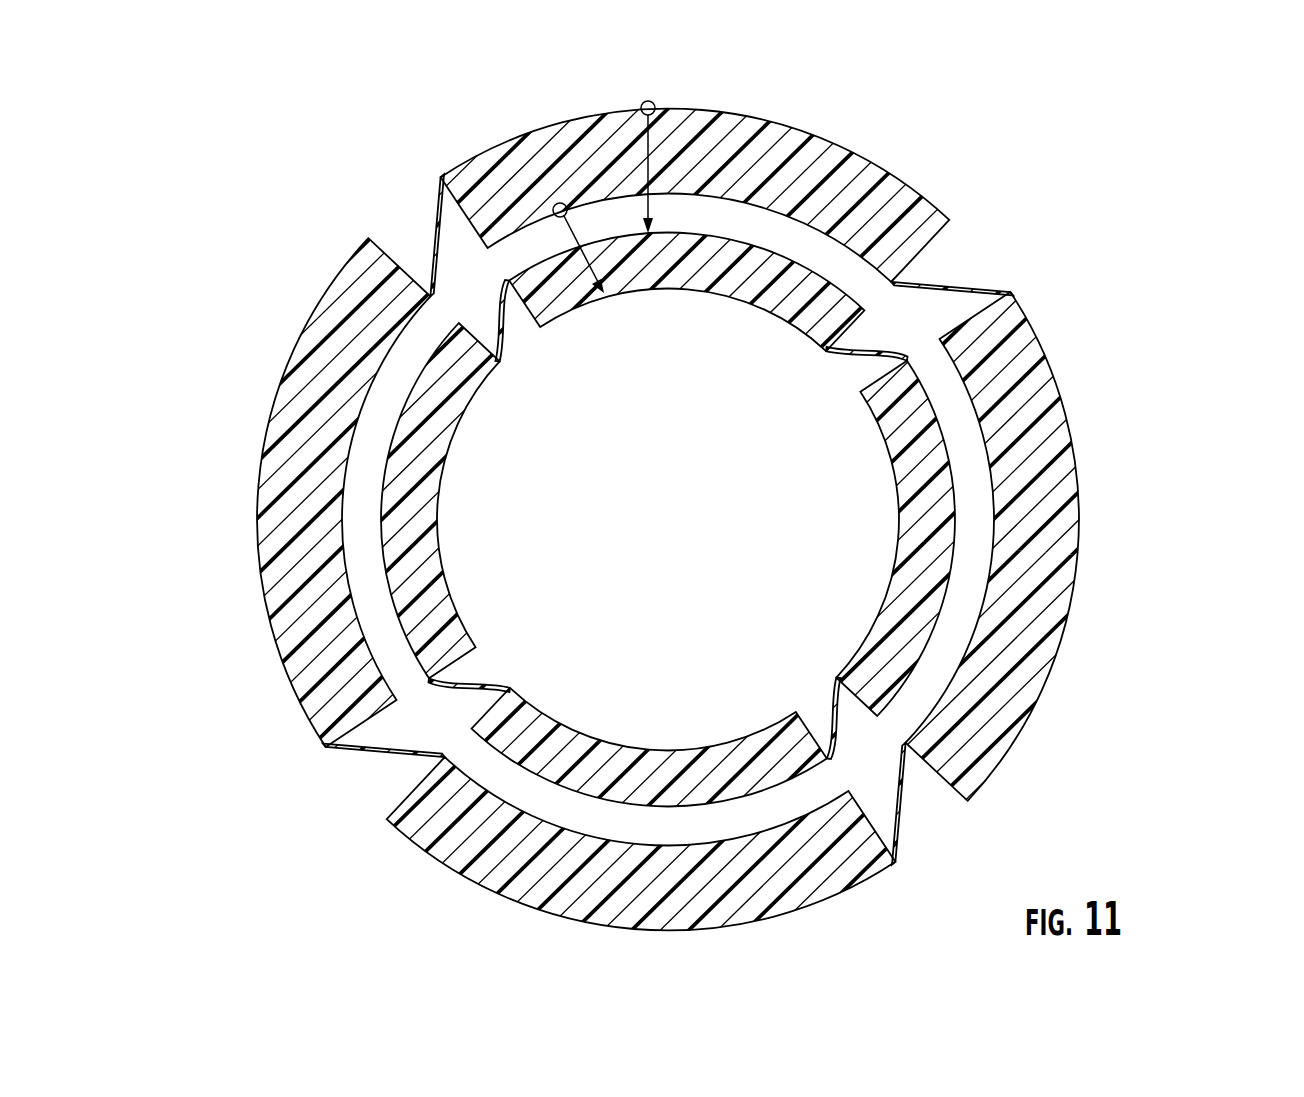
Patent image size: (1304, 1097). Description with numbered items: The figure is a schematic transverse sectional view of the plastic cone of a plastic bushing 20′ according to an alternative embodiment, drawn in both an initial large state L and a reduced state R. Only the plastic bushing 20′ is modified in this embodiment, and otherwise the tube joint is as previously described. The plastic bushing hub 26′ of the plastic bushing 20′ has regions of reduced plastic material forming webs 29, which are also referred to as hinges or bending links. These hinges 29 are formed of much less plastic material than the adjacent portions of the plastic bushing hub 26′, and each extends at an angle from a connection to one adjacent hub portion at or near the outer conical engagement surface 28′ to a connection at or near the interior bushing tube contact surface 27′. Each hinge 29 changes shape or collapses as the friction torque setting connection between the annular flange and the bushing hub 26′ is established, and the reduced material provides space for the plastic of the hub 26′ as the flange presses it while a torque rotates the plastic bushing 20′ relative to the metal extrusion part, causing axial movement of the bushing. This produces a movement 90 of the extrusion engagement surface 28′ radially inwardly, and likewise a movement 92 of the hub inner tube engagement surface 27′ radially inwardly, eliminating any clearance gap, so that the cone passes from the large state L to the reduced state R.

The plastic bushing 20′ is at (1151, 603).
The plastic bushing hub 26′ is at (920, 512).
The interior bushing tube contact surface 27′ is at (413, 385).
The outer conical engagement surface 28′ is at (950, 575).
The web 29 is at (436, 216).
The movement of extrusion engagement surface 90 is at (654, 150).
The movement of hub inner surface 92 is at (569, 214).
The initial large state L is at (840, 143).
The reduced state R is at (755, 305).